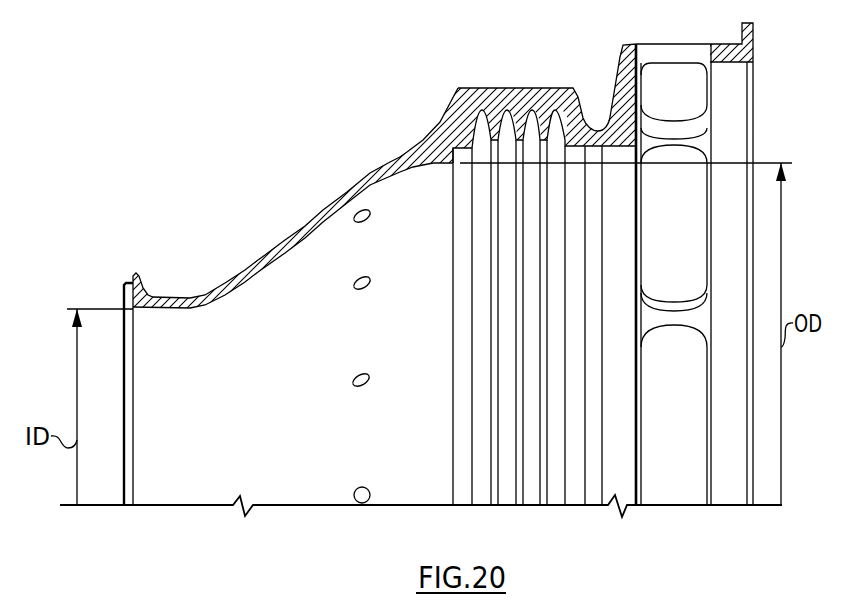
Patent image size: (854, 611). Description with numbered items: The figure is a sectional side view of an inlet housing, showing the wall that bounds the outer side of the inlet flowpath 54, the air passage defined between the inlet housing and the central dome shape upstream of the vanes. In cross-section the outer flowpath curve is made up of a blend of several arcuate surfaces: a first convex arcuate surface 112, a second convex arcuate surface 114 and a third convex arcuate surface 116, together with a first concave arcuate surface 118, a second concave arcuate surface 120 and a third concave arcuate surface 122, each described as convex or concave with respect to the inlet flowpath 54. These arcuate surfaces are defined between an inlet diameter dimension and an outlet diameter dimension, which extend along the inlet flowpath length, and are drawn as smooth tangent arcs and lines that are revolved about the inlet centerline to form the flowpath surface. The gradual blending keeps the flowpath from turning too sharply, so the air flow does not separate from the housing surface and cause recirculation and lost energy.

The inlet flowpath 54 is at (328, 341).
The first convex arcuate surface 112 is at (194, 309).
The second convex arcuate surface 114 is at (247, 284).
The third convex arcuate surface 116 is at (283, 252).
The first concave arcuate surface 118 is at (303, 226).
The second concave arcuate surface 120 is at (352, 188).
The third concave arcuate surface 122 is at (390, 160).